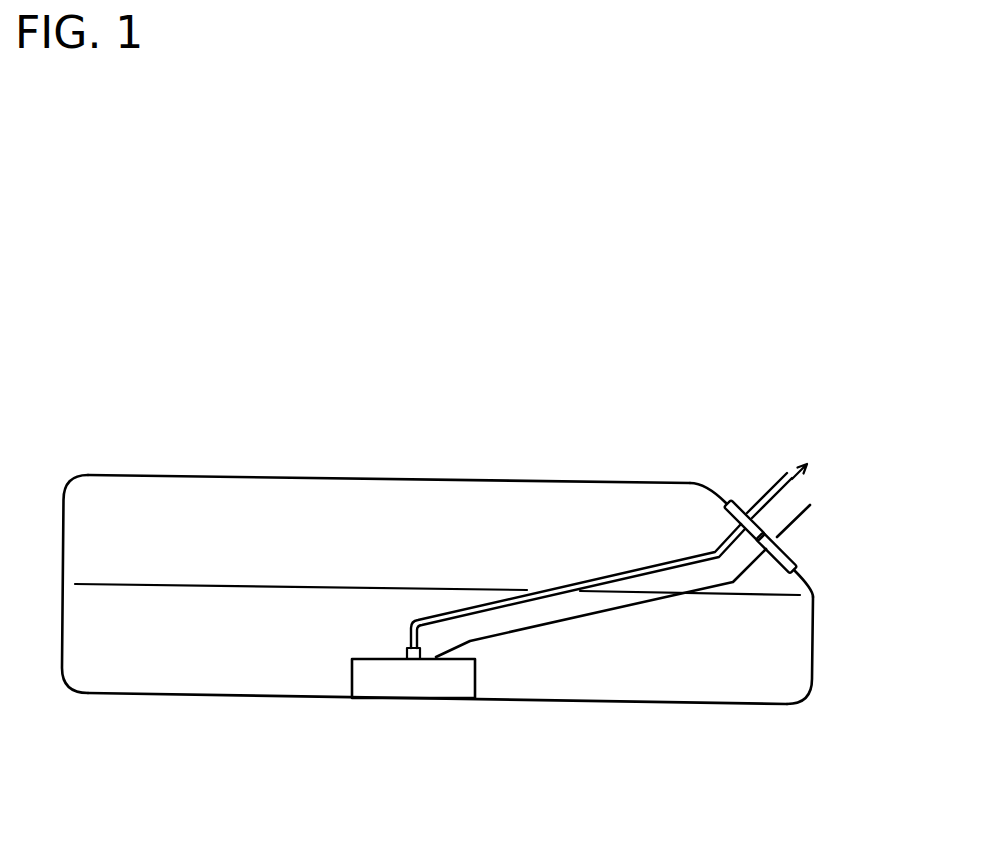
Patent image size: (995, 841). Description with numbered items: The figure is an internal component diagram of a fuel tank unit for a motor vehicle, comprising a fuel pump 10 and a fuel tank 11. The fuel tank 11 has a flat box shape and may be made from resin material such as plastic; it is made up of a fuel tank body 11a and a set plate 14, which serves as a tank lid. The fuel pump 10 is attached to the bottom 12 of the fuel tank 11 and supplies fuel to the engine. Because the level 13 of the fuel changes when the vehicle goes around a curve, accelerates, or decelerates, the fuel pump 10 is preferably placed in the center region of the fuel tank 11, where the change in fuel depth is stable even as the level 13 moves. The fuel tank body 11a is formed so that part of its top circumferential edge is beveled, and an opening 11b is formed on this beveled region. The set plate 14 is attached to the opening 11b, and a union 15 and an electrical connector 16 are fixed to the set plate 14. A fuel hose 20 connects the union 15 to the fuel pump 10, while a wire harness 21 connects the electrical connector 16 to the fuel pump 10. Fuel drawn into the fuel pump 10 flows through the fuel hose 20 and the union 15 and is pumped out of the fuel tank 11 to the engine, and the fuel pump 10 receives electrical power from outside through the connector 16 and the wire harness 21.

The fuel pump 10 is at (412, 687).
The fuel tank 11 is at (462, 478).
The fuel tank body 11a is at (333, 478).
The opening 11b is at (735, 497).
The bottom 12 is at (208, 694).
The level 13 is at (188, 584).
The set plate 14 is at (745, 503).
The union 15 is at (765, 517).
The electrical connector 16 is at (807, 555).
The fuel hose 20 is at (630, 570).
The wire harness 21 is at (567, 620).